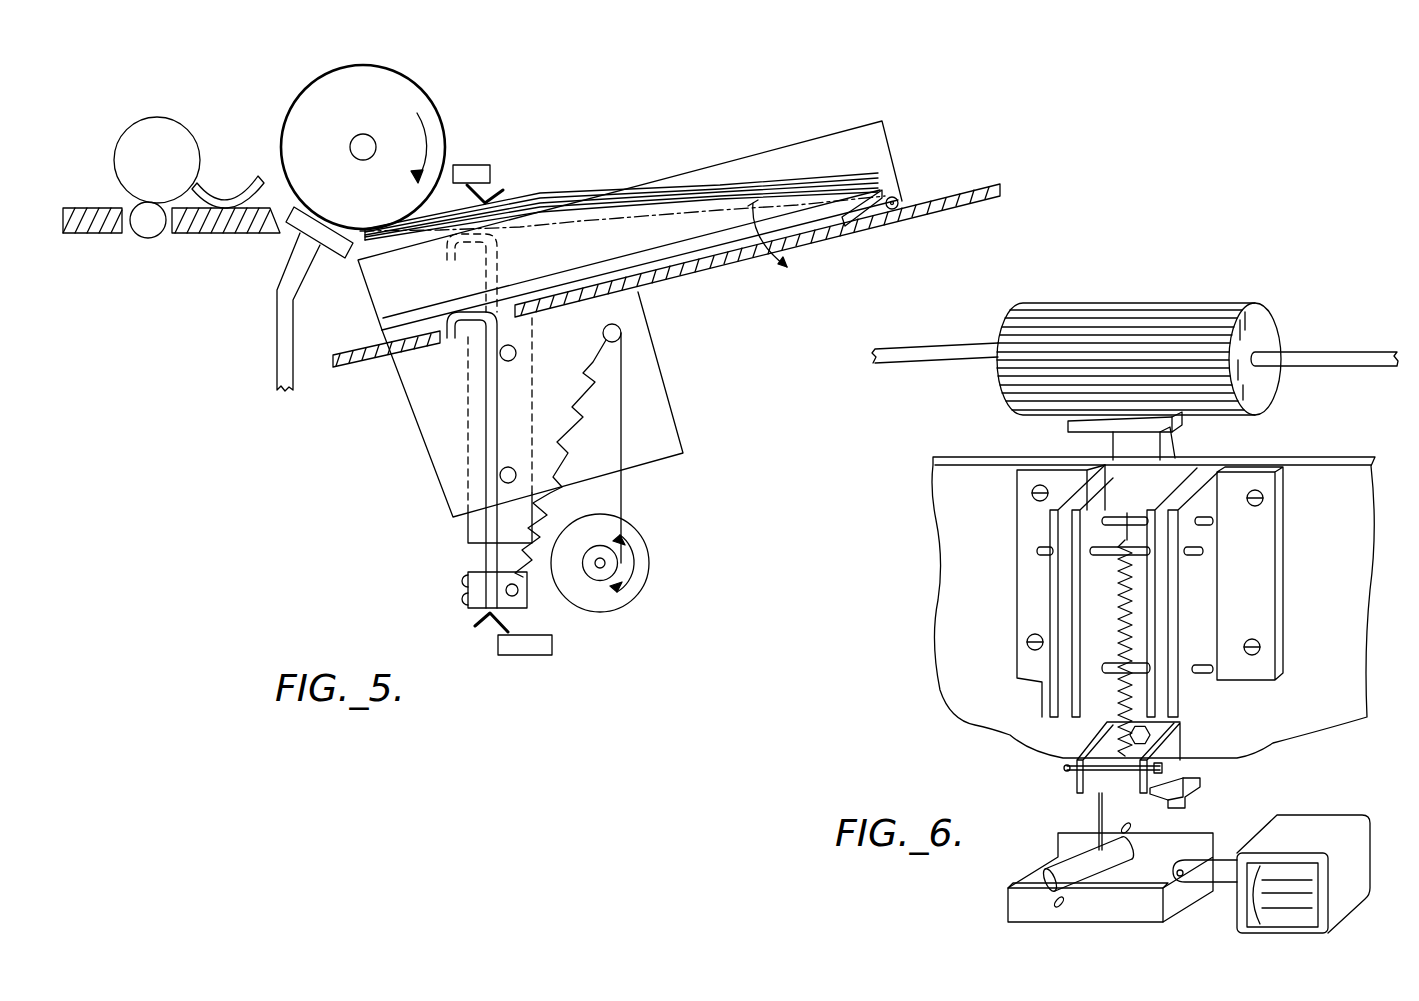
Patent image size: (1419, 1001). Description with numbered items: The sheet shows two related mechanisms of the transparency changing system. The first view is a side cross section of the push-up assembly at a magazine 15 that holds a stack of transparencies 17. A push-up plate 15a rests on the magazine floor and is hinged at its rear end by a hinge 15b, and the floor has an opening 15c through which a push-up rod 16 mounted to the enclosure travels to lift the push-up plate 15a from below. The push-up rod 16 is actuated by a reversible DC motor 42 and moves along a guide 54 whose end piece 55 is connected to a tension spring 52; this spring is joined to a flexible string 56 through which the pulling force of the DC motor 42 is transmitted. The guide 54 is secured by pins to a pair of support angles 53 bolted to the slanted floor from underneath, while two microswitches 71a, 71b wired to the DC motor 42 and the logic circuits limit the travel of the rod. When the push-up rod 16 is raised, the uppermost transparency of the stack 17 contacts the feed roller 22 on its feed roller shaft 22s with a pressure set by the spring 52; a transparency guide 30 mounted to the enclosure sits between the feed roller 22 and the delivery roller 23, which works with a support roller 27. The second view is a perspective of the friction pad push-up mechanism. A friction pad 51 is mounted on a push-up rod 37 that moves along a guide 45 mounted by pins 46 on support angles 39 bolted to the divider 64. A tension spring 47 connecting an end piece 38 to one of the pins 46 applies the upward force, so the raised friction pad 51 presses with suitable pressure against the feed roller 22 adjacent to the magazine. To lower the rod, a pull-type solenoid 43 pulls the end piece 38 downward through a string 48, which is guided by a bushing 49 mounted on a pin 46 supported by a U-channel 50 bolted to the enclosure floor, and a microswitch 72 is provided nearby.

In FIG. 5, the magazine 15 is at (895, 162).
In FIG. 5, the push-up plate 15a is at (757, 250).
In FIG. 5, the hinge 15b is at (877, 218).
In FIG. 5, the opening 15c is at (447, 345).
In FIG. 5, the push-up rod 16 is at (486, 408).
In FIG. 5, the stack of transparencies 17 is at (585, 195).
In FIG. 5, the feed roller 22 is at (430, 116).
In FIG. 6, the feed roller 22 is at (1140, 303).
In FIG. 6, the feed roller shaft 22s is at (1315, 350).
In FIG. 5, the delivery roller 23 is at (170, 126).
In FIG. 5, the support roller 27 is at (154, 237).
In FIG. 5, the guide 30 is at (216, 181).
In FIG. 5, the push-up rod 37 is at (280, 312).
In FIG. 6, the push-up rod 37 is at (1125, 440).
In FIG. 6, the end piece 38 is at (1180, 740).
In FIG. 6, the support angle 39 is at (1023, 505).
In FIG. 5, the DC motor for push-up rod 42 is at (632, 542).
In FIG. 6, the solenoid for friction pad 43 is at (1305, 815).
In FIG. 6, the guide 45 is at (1090, 590).
In FIG. 6, the pin 46 is at (1203, 551).
In FIG. 6, the tension spring 47 is at (1080, 745).
In FIG. 6, the string 48 is at (1177, 884).
In FIG. 6, the bushing 49 is at (1060, 867).
In FIG. 6, the U-channel 50 is at (1110, 912).
In FIG. 5, the friction pad 51 is at (293, 236).
In FIG. 6, the friction pad 51 is at (1178, 423).
In FIG. 5, the tension spring 52 is at (587, 364).
In FIG. 5, the support angle 53 is at (660, 351).
In FIG. 5, the guide 54 is at (466, 526).
In FIG. 5, the end piece 55 is at (527, 605).
In FIG. 5, the string 56 is at (623, 485).
In FIG. 6, the divider 64 is at (1350, 572).
In FIG. 5, the microswitch 71a is at (480, 170).
In FIG. 5, the microswitch 71b is at (525, 656).
In FIG. 6, the microswitch 72 is at (1200, 785).